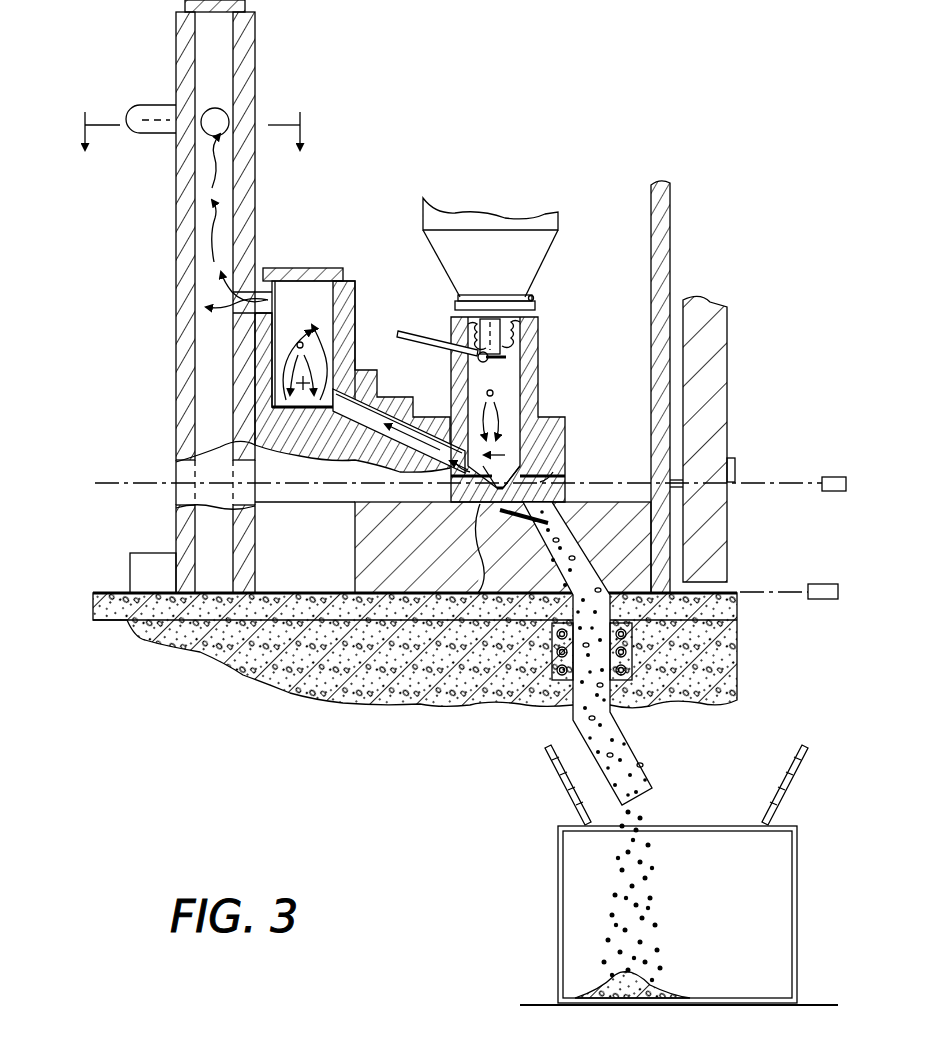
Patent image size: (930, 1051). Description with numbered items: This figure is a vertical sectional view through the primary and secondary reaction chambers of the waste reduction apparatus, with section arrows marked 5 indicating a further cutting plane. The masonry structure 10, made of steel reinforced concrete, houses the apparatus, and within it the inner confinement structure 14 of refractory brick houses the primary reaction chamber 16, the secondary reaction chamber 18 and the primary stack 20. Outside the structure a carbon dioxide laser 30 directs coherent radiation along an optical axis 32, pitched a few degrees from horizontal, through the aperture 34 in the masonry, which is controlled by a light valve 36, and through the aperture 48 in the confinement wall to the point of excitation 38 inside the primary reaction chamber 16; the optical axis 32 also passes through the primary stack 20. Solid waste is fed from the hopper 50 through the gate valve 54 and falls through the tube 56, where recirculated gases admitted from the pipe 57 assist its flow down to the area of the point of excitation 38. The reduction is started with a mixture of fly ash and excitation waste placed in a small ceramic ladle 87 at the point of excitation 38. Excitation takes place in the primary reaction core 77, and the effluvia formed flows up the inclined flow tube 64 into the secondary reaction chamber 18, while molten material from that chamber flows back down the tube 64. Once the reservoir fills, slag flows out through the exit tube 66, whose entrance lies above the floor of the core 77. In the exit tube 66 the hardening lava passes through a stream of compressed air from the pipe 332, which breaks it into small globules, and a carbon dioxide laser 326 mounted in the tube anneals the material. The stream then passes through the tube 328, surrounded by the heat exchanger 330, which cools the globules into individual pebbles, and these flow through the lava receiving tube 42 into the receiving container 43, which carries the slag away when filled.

The section line 5- 5 is at (195, 112).
The masonry structure 10 is at (727, 342).
The inner confinement structure 14 is at (668, 206).
The primary reaction chamber 16 is at (512, 430).
The secondary reaction chamber 18 is at (308, 292).
The primary stack 20 is at (240, 208).
The carbon dioxide laser 30 is at (832, 491).
The optical axis 32 is at (152, 452).
The aperture 34 is at (727, 505).
The light valve 36 is at (735, 460).
The point of excitation 38 is at (515, 462).
The lava receiving tube 42 is at (637, 770).
The receiving container 43 is at (797, 930).
The aperture 48 is at (655, 478).
The hopper 50 is at (540, 246).
The gate valve 54 is at (462, 298).
The tube 56 is at (515, 358).
The pipe 57 is at (433, 330).
The inclined flow tube 64 is at (386, 405).
The exit tube 66 is at (578, 524).
The primary reaction core 77 is at (474, 512).
The ladle 87 is at (484, 520).
The carbon dioxide laser 326 is at (830, 600).
The tube 328 is at (645, 708).
The heat exchanger 330 is at (560, 712).
The pipe 332 is at (490, 528).